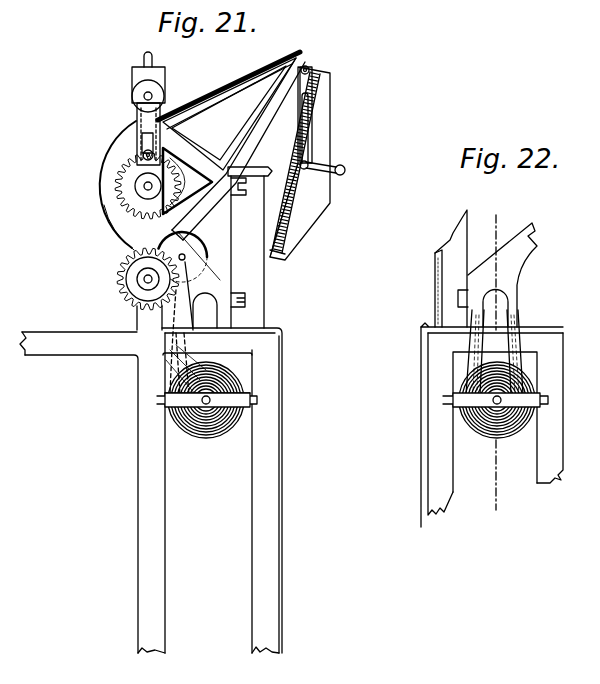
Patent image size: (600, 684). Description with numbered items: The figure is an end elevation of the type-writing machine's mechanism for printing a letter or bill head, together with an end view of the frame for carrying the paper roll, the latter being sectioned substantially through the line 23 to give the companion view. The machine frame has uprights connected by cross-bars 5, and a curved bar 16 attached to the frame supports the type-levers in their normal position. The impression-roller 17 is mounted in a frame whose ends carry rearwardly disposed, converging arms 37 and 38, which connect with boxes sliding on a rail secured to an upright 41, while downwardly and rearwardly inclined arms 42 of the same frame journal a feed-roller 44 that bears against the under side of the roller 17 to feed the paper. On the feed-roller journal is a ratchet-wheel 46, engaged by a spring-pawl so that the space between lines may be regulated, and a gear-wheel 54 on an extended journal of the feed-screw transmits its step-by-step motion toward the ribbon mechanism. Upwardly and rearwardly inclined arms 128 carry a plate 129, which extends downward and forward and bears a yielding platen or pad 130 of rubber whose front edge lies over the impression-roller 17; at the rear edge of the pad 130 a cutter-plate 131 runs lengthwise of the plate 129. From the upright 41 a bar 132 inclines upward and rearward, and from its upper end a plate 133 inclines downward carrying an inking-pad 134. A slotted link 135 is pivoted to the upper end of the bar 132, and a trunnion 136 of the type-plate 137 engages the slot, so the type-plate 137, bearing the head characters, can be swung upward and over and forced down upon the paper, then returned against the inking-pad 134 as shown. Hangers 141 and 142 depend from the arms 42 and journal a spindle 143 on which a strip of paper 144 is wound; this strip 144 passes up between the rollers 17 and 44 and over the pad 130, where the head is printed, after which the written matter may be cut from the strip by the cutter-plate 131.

In FIG. 21, the cross-bars 5 is at (78, 330).
In FIG. 21, the curved bar 16 is at (132, 145).
In FIG. 21, the impression-roller 17 is at (110, 183).
In FIG. 22, the section line 23 is at (496, 363).
In FIG. 21, the converging arm 37 is at (213, 152).
In FIG. 21, the converging arm 38 is at (218, 207).
In FIG. 21, the upright 41 is at (267, 315).
In FIG. 21, the inclined arm 42 is at (200, 280).
In FIG. 21, the feed-roller 44 is at (188, 248).
In FIG. 21, the ratchet-wheel 46 is at (123, 173).
In FIG. 21, the gear-wheel 54 is at (123, 265).
In FIG. 21, the inclined arm 128 is at (260, 112).
In FIG. 21, the plate 129 is at (229, 113).
In FIG. 21, the platen or pad 130 is at (245, 72).
In FIG. 21, the cutter-plate 131 is at (307, 60).
In FIG. 21, the bar 132 is at (256, 188).
In FIG. 21, the plate 133 is at (275, 210).
In FIG. 21, the inking-pad 134 is at (290, 253).
In FIG. 21, the link 135 is at (303, 83).
In FIG. 21, the trunnion 136 is at (306, 160).
In FIG. 21, the type-plate 137 is at (297, 210).
In FIG. 21, the hanger 141 is at (243, 363).
In FIG. 22, the hanger 142 is at (515, 305).
In FIG. 21, the spindle 143 is at (206, 408).
In FIG. 22, the spindle 143 is at (498, 404).
In FIG. 21, the strip of paper 144 is at (145, 109).